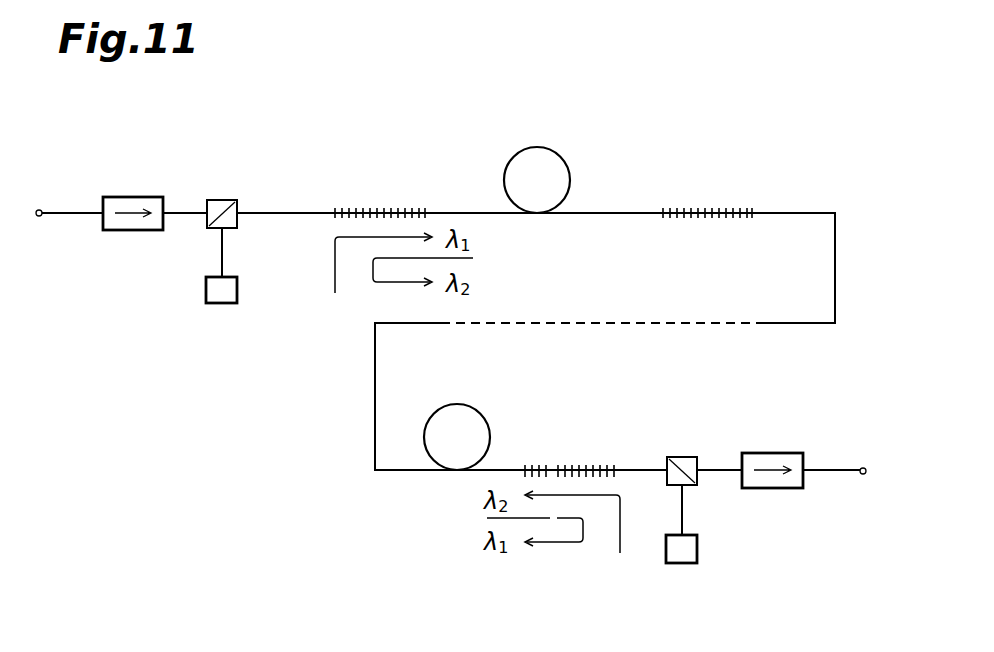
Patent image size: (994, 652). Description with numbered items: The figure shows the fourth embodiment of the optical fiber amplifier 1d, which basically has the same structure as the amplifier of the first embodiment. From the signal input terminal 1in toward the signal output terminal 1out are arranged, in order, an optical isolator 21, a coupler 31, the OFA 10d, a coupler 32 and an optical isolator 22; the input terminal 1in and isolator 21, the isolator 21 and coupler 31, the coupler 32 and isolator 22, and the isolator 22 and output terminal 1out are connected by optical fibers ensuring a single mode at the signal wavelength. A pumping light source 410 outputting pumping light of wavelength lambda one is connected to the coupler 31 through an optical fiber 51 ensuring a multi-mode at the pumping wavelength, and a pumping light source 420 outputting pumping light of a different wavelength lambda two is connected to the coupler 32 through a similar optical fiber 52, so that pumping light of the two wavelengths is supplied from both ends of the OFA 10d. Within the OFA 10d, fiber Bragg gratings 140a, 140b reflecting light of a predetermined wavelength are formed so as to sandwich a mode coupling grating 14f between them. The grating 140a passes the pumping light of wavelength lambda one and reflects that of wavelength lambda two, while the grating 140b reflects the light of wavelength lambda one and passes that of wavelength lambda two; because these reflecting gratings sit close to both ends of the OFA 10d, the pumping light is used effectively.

The optical fiber amplifier 1d is at (818, 160).
The signal input terminal 1in is at (39, 217).
The signal output terminal 1out is at (863, 475).
The optical isolator 21 is at (133, 197).
The optical isolator 22 is at (771, 453).
The coupler 31 is at (220, 200).
The coupler 32 is at (682, 457).
The optical fiber 51 is at (223, 256).
The optical fiber 52 is at (684, 515).
The pumping light source 410 is at (222, 304).
The pumping light source 420 is at (682, 564).
The fiber Bragg grating 140a is at (388, 208).
The fiber Bragg grating 140b is at (578, 465).
The mode coupling grating 14f is at (715, 208).
The OFA 10d is at (536, 148).